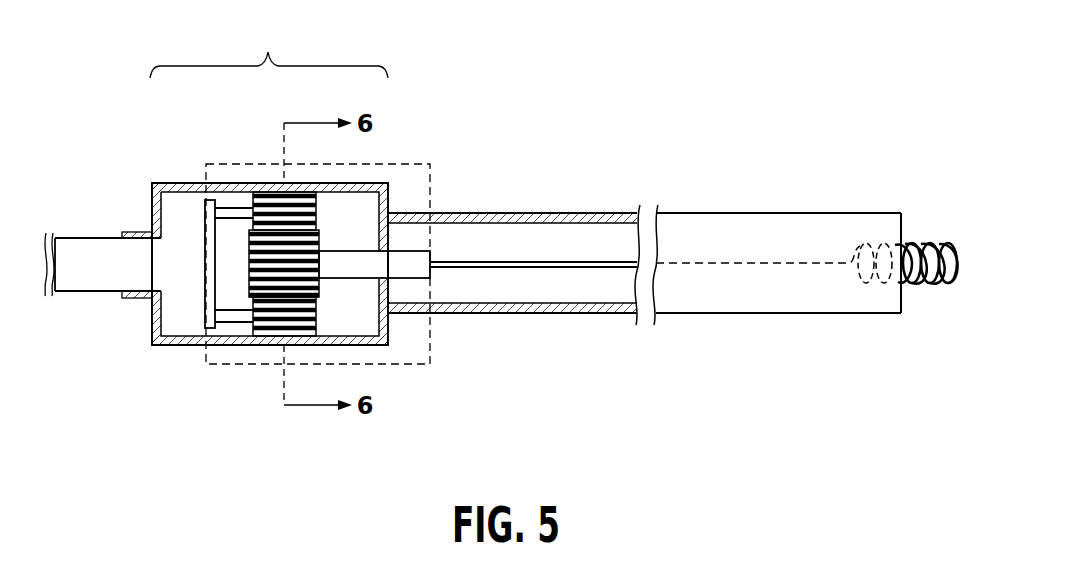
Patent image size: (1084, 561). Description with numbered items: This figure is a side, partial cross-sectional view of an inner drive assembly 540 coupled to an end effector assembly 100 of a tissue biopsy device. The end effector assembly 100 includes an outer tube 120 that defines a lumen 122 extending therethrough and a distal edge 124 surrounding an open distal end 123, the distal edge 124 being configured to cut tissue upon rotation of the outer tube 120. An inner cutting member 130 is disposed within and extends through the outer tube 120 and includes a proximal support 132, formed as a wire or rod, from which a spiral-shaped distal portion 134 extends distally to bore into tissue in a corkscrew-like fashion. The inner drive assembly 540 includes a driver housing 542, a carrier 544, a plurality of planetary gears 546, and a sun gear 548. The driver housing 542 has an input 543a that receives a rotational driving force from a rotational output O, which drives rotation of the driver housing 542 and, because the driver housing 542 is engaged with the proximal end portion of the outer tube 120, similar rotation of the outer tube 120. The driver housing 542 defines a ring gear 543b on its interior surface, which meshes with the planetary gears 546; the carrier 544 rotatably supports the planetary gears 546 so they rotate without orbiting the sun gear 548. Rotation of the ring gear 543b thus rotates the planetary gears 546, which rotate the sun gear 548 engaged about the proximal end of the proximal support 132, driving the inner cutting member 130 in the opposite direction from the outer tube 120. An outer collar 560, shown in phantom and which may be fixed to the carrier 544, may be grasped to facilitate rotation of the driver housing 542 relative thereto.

The end effector assembly 100 is at (792, 128).
The outer tube 120 is at (573, 213).
The lumen 122 is at (572, 287).
The open distal end 123 is at (857, 213).
The distal edge 124 is at (903, 300).
The inner cutting member 130 is at (497, 266).
The proximal support 132 is at (413, 278).
The spiral-shaped distal portion 134 is at (928, 220).
The inner drive assembly 540 is at (269, 49).
The driver housing 542 is at (163, 346).
The input 543a is at (128, 232).
The ring gear 543b is at (190, 183).
The carrier 544 is at (205, 287).
The planetary gears 546 is at (256, 193).
The sun gear 548 is at (319, 266).
The outer collar 560 is at (397, 364).
The rotational output O is at (88, 248).